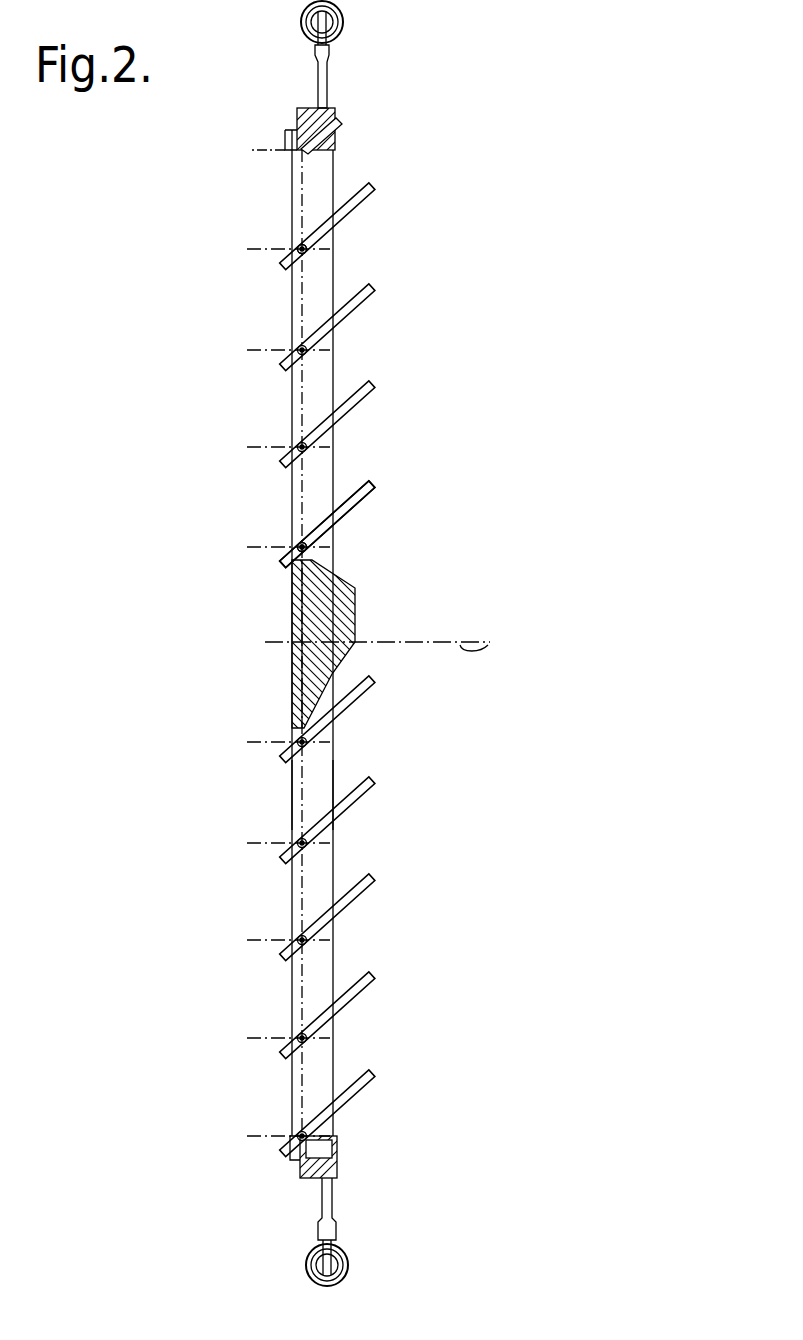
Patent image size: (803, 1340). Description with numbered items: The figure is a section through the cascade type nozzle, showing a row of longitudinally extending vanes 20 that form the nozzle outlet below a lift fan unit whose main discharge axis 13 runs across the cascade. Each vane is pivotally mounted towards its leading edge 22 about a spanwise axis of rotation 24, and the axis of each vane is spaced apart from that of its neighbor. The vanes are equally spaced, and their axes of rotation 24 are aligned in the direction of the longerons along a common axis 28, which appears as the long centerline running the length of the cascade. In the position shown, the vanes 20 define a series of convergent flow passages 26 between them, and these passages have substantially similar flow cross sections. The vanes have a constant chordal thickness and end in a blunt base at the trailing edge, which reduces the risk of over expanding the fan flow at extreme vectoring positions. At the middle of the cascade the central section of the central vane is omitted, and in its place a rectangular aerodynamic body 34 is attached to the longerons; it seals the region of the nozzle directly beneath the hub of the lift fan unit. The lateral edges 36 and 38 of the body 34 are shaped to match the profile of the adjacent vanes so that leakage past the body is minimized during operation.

The main discharge axis 13 is at (395, 642).
The vane 20 is at (366, 199).
The leading edge 22 is at (290, 358).
The spanwise axis of rotation 24 is at (300, 247).
The convergent flow passage 26 is at (398, 256).
The axis 28 is at (300, 788).
The rectangular aerodynamic body 34 is at (292, 622).
The lateral edge 36 is at (292, 565).
The lateral edge 38 is at (352, 683).